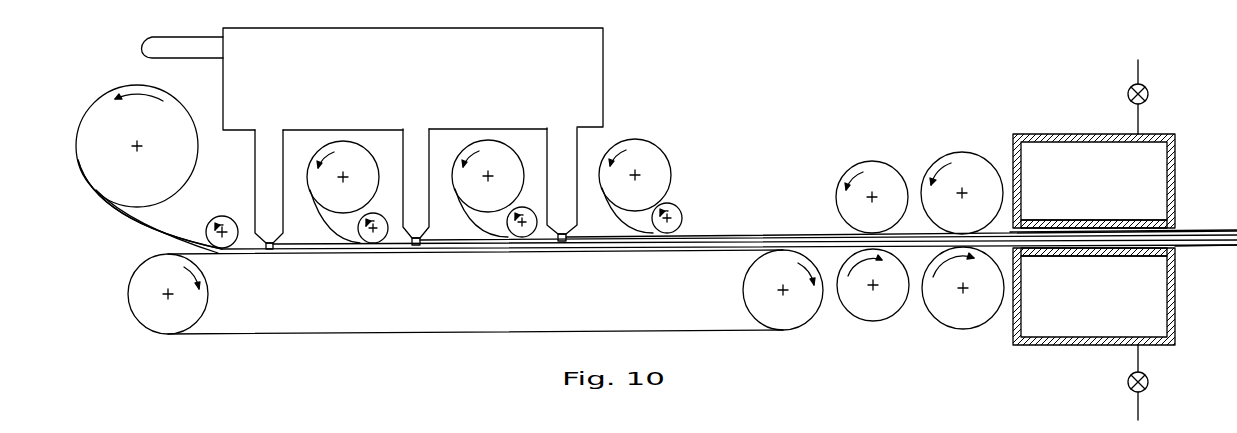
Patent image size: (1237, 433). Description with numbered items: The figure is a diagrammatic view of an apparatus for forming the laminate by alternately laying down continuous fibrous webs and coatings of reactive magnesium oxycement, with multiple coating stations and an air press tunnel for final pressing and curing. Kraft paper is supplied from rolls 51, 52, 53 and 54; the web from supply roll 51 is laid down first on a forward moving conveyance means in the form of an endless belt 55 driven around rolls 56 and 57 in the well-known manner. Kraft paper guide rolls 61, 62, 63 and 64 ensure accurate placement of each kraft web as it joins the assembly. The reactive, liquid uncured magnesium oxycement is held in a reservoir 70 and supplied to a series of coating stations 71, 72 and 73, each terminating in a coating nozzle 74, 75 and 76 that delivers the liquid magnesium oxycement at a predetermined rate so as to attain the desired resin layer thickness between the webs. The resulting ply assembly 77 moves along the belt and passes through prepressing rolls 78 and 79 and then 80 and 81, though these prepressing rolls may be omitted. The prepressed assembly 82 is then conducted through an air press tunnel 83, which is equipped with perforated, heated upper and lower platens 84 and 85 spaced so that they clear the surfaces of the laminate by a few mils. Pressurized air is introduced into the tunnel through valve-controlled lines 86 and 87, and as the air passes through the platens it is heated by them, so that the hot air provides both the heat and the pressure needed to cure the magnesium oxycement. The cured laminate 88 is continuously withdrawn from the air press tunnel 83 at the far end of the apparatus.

The supply roll 51 is at (107, 112).
The supply roll 52 is at (322, 180).
The supply roll 53 is at (467, 183).
The supply roll 54 is at (610, 183).
The endless belt 55 is at (235, 335).
The belt roll 56 is at (138, 304).
The belt roll 57 is at (790, 318).
The kraft paper guide roll 61 is at (228, 220).
The kraft paper guide roll 62 is at (380, 217).
The kraft paper guide roll 63 is at (527, 214).
The kraft paper guide roll 64 is at (672, 215).
The reservoir 70 is at (590, 52).
The coating station 71 is at (254, 170).
The coating station 72 is at (405, 163).
The coating station 73 is at (555, 163).
The coating nozzle 74 is at (270, 250).
The coating nozzle 75 is at (416, 247).
The coating nozzle 76 is at (562, 243).
The ply assembly 77 is at (766, 232).
The prepressing roll 78 is at (875, 175).
The prepressing roll 79 is at (868, 312).
The prepressing roll 80 is at (962, 165).
The prepressing roll 81 is at (948, 315).
The prepressed assembly 82 is at (1007, 230).
The air press tunnel 83 is at (1075, 133).
The upper platen 84 is at (1086, 222).
The lower platen 85 is at (1090, 257).
The valve-controlled line 86 is at (1142, 70).
The valve-controlled line 87 is at (1142, 403).
The laminate 88 is at (1208, 230).